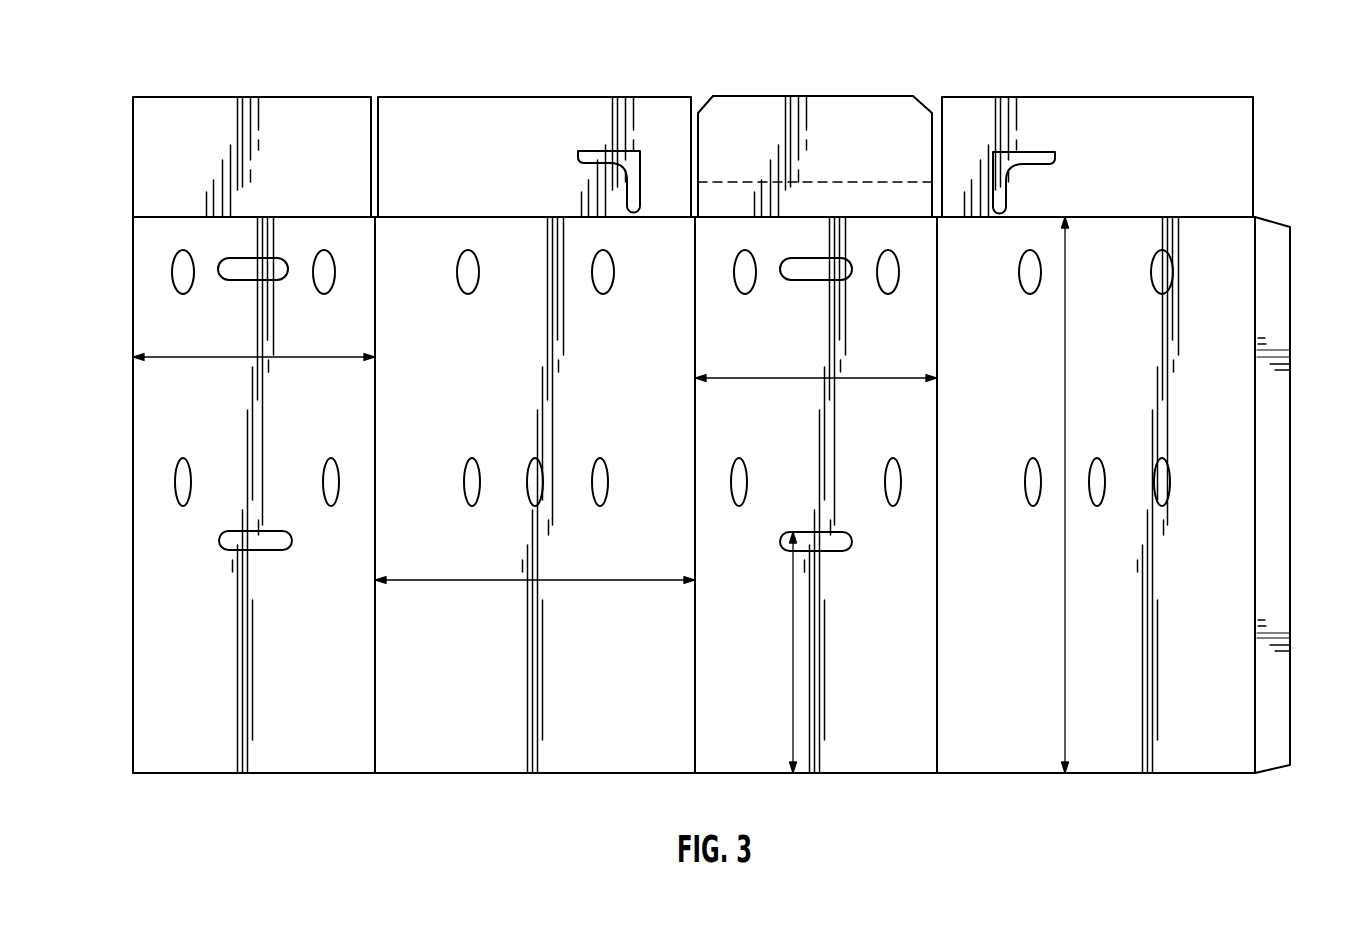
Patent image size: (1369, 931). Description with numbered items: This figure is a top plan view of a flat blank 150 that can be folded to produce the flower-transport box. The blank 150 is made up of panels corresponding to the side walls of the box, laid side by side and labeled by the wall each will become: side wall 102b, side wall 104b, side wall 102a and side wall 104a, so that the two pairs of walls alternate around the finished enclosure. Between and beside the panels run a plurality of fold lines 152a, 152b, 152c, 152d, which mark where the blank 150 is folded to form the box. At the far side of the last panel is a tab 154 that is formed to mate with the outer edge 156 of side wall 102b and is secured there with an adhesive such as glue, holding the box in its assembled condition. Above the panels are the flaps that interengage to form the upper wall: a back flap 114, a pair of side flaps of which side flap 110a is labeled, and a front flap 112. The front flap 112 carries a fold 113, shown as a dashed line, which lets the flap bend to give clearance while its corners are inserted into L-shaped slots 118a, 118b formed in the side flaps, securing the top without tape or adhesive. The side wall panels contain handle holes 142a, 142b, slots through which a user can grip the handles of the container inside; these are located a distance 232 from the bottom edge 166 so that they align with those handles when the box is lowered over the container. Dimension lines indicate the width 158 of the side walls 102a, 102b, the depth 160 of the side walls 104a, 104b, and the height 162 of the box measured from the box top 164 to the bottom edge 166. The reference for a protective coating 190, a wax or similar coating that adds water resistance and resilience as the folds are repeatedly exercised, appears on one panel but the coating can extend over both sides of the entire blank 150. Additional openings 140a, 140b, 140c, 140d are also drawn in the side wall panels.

The blank 150 is at (207, 76).
The back flap 114 is at (342, 106).
The side flap 110a is at (478, 106).
The slot 118b is at (585, 155).
The slot 118a is at (1058, 155).
The front flap 112 is at (845, 108).
The fold 113 is at (848, 182).
The box top 164 is at (195, 216).
The bottom edge 166 is at (480, 774).
The outer edge 156 is at (131, 482).
The fold line 152a is at (378, 305).
The fold line 152b is at (698, 398).
The fold line 152c is at (940, 305).
The fold line 152d is at (1252, 683).
The side wall 102a is at (733, 683).
The side wall 102b is at (173, 643).
The side wall 104a is at (976, 681).
The side wall 104b is at (406, 683).
The protective coating 190 is at (473, 411).
The tab 154 is at (1285, 548).
The vent opening 140a is at (746, 290).
The vent opening 140b is at (886, 290).
The vent opening 140c is at (1022, 265).
The vent opening 140d is at (1158, 268).
The handle hole 142a is at (850, 542).
The handle hole 142b is at (230, 540).
The width 158 is at (230, 357).
The depth 160 is at (460, 580).
The height 162 is at (1062, 572).
The distance 232 is at (793, 668).